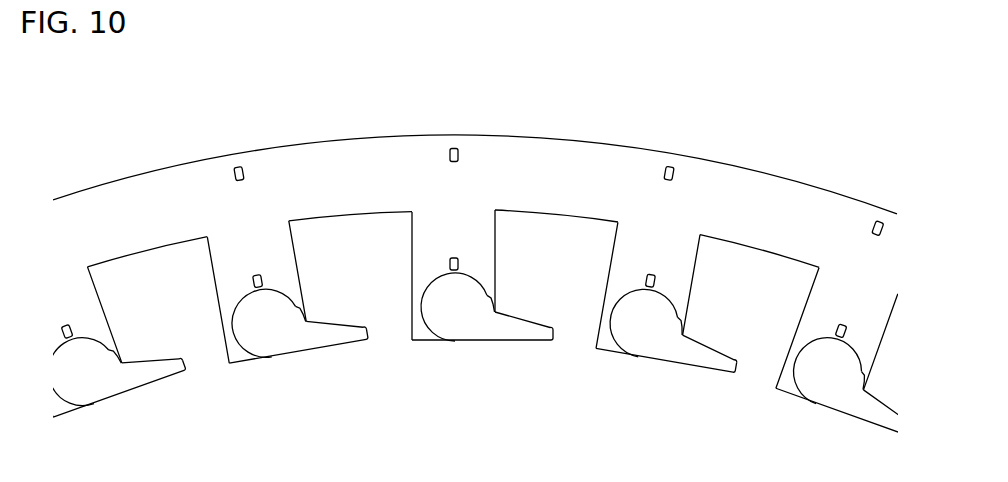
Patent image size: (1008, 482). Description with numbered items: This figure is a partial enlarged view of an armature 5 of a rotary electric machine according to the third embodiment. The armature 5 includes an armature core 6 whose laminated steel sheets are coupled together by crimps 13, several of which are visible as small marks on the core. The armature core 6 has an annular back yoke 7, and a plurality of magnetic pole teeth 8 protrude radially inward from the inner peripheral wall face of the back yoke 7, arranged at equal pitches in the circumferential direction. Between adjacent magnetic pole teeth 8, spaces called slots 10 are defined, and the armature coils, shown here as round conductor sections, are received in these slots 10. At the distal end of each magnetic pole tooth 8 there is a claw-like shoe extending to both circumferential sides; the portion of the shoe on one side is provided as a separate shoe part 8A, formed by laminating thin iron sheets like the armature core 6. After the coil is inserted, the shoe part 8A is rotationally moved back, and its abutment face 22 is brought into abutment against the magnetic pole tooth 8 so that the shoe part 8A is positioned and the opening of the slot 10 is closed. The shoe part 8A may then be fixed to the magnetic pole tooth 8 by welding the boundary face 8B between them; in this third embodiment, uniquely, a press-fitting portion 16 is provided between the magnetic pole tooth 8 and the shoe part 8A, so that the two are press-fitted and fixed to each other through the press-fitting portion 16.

The armature 5 is at (453, 238).
The armature core 6 is at (723, 165).
The back yoke 7 is at (527, 167).
The slot 10 is at (573, 337).
The magnetic pole tooth 8 is at (478, 358).
The shoe part 8A is at (715, 363).
The boundary face 8B is at (625, 360).
The press-fitting portion 16 is at (658, 360).
The abutment face 22 is at (496, 317).
The crimp 13 is at (449, 258).